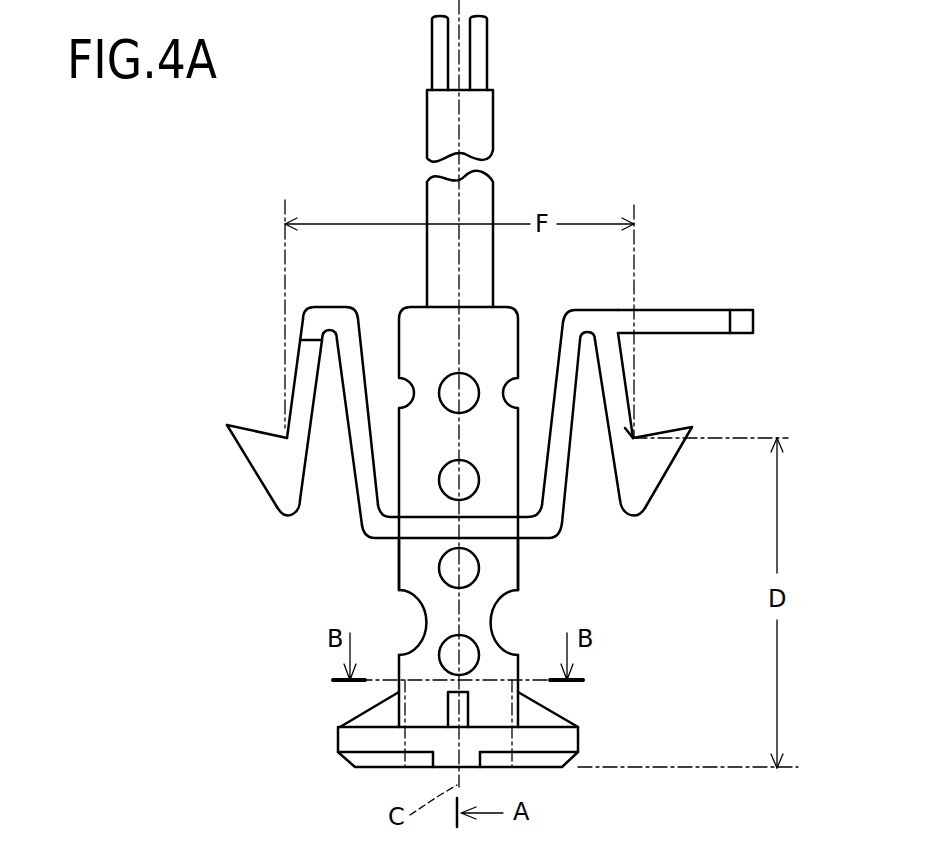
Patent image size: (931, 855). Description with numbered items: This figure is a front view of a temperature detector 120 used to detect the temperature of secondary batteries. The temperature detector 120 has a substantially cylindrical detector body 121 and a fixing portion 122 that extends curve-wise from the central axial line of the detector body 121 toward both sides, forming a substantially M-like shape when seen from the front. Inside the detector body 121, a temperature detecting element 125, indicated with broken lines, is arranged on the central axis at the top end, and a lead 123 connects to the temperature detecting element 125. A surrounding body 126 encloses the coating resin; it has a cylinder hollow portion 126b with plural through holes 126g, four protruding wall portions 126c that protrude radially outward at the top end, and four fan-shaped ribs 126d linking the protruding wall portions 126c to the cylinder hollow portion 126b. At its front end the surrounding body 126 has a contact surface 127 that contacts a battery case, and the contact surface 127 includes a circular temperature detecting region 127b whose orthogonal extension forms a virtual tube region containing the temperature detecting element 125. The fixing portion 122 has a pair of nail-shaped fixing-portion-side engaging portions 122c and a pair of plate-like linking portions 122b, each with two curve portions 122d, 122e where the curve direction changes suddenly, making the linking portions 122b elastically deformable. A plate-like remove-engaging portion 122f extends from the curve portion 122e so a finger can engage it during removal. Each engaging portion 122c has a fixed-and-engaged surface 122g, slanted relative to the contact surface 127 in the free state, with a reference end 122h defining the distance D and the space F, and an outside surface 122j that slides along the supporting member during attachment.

The temperature detector 120 is at (597, 125).
The detector body 121 is at (503, 572).
The fixing portion 122 is at (307, 350).
The linking portion 122b is at (293, 378).
The fixing-portion-side engaging portion 122c is at (257, 452).
The curve portion 122d is at (363, 533).
The curve portion 122e is at (330, 318).
The remove-engaging portion 122f is at (680, 320).
The fixed-and-engaged surface 122g is at (668, 427).
The reference end 122h is at (635, 437).
The outside surface 122j is at (248, 473).
The lead 123 is at (443, 127).
The temperature detecting element 125 is at (470, 710).
The surrounding body 126 is at (410, 570).
The cylinder hollow portion 126b is at (412, 657).
The protruding wall portion 126c is at (373, 715).
The rib 126d is at (567, 740).
The through hole 126g is at (463, 387).
The contact surface 127 is at (537, 768).
The temperature detecting region 127b is at (417, 768).